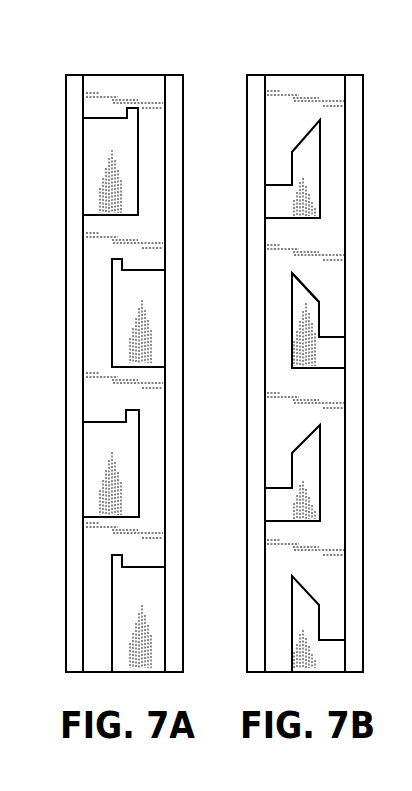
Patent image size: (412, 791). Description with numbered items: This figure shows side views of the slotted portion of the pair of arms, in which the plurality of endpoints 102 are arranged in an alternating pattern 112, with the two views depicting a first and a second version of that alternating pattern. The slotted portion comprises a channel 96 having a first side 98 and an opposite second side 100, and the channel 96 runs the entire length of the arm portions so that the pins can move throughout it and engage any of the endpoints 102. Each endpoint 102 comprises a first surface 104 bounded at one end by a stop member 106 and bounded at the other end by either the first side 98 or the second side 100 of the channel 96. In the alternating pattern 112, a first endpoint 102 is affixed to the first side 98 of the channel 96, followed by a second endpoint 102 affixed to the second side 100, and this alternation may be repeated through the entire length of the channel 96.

In FIG. 7A, the channel 96 is at (148, 83).
In FIG. 7B, the channel 96 is at (329, 373).
In FIG. 7A, the first side 98 is at (86, 110).
In FIG. 7B, the first side 98 is at (266, 110).
In FIG. 7A, the second side 100 is at (162, 192).
In FIG. 7B, the second side 100 is at (342, 153).
In FIG. 7A, the endpoints 102 is at (148, 262).
In FIG. 7B, the endpoints 102 is at (332, 337).
In FIG. 7A, the first surface 104 is at (147, 568).
In FIG. 7B, the first surface 104 is at (330, 643).
In FIG. 7A, the stop member 106 is at (140, 111).
In FIG. 7B, the stop member 106 is at (308, 292).
In FIG. 7A, the alternating pattern 112 is at (124, 54).
In FIG. 7B, the alternating pattern 112 is at (301, 54).